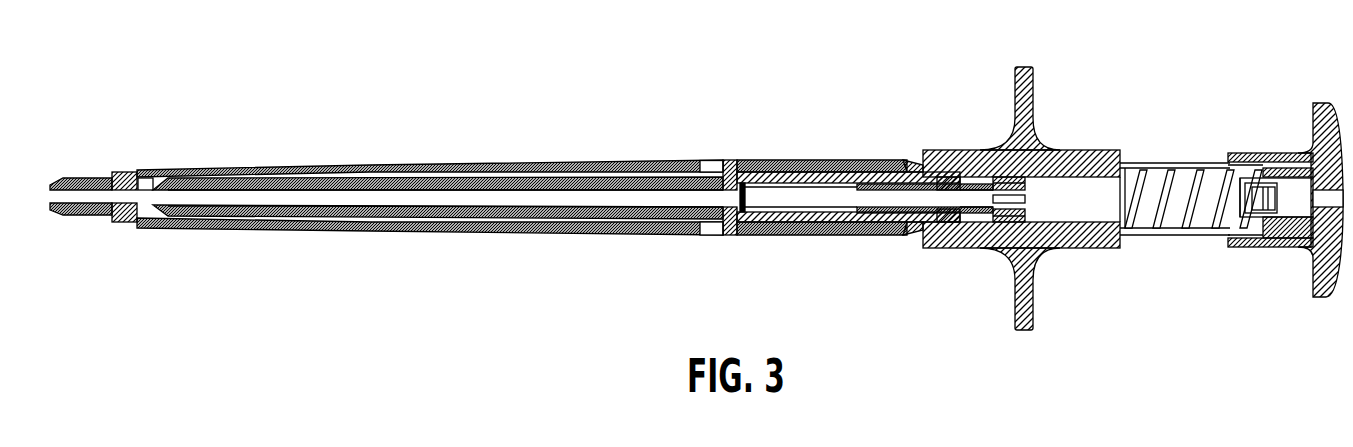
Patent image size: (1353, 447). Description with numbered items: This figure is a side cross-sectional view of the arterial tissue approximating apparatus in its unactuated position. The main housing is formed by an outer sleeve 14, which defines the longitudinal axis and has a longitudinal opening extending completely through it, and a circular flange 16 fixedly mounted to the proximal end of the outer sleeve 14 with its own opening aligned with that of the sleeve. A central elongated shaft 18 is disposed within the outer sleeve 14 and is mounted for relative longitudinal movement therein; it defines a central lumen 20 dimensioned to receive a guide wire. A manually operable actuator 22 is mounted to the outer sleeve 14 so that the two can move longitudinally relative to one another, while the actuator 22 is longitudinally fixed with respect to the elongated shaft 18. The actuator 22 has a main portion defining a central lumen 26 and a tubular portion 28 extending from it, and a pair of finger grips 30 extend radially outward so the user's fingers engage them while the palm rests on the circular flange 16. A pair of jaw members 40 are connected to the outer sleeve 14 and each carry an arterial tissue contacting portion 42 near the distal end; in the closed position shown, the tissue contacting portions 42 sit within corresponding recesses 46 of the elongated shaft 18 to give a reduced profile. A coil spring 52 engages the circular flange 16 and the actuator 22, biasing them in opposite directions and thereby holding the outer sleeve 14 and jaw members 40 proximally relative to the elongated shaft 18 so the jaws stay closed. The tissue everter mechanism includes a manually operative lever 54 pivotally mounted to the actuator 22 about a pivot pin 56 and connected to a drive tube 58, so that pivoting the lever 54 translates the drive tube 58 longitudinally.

The outer sleeve 14 is at (703, 165).
The circular flange 16 is at (1316, 280).
The central elongated shaft 18 is at (455, 187).
The central lumen 20 is at (447, 199).
The manually operable actuator 22 is at (1052, 277).
The central lumen 26 is at (1292, 210).
The tubular portion 28 is at (1232, 247).
The finger grips 30 is at (1020, 90).
The jaw members 40 is at (280, 165).
The arterial tissue contacting portion 42 is at (114, 172).
The recesses 46 is at (147, 176).
The coil spring 52 is at (1160, 177).
The manually operative lever 54 is at (1000, 222).
The pivot pin 56 is at (993, 198).
The drive tube 58 is at (915, 173).